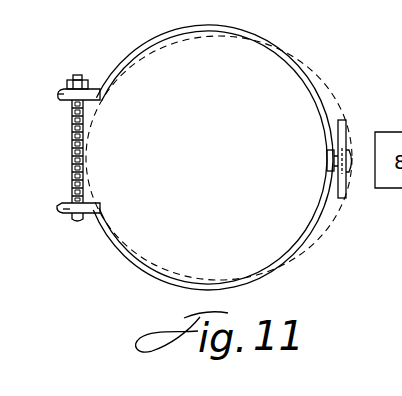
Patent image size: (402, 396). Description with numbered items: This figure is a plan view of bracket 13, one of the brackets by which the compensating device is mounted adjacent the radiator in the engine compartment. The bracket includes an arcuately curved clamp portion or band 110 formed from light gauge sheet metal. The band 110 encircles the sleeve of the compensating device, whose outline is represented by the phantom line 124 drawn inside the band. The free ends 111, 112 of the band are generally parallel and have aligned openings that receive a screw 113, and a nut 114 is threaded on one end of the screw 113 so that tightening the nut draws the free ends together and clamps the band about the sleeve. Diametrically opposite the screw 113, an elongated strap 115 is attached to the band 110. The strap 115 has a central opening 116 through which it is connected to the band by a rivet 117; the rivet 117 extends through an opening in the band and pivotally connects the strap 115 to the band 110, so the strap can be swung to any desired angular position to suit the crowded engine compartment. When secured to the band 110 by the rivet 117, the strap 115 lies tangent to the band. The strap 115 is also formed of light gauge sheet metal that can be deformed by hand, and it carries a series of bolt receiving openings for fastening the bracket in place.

The bracket 13 is at (261, 30).
The band 110 is at (281, 265).
The free end 111 is at (76, 216).
The free end 112 is at (94, 95).
The screw 113 is at (72, 152).
The nut 114 is at (70, 84).
The elongated strap 115 is at (347, 126).
The central opening 116 is at (350, 176).
The rivet 117 is at (326, 161).
The phantom line 124 is at (317, 93).